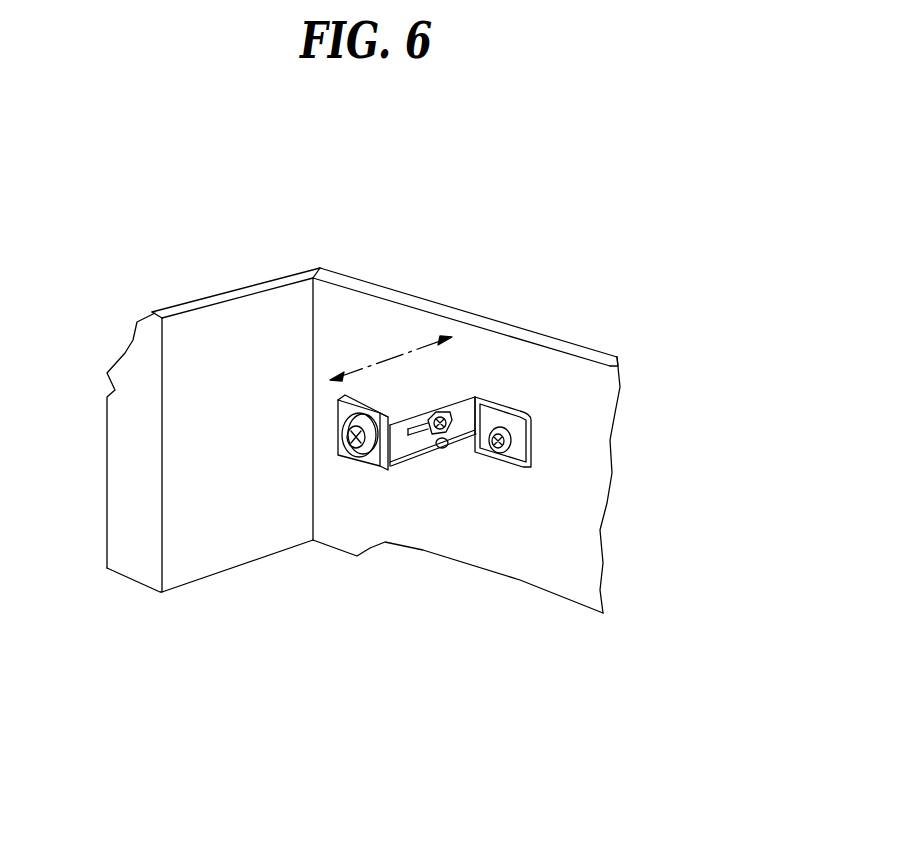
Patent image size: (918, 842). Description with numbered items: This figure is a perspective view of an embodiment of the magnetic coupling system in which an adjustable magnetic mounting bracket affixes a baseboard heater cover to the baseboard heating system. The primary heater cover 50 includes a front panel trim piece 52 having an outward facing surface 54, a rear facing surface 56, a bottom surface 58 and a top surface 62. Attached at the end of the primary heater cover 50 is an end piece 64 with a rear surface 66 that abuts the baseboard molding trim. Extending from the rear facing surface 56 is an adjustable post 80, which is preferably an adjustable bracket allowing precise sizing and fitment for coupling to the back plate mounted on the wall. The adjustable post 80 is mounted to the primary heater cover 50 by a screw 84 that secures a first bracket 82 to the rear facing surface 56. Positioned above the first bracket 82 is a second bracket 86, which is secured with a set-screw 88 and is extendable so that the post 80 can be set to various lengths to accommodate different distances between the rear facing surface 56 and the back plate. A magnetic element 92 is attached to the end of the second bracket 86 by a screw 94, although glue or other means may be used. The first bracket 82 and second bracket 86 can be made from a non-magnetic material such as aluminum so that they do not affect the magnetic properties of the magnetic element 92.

The primary heater cover 50 is at (380, 283).
The front panel trim piece 52 is at (617, 400).
The outward facing surface 54 is at (500, 322).
The rear facing surface 56 is at (570, 570).
The bottom surface 58 is at (138, 580).
The top surface 62 is at (335, 277).
The end piece 64 is at (193, 300).
The rear surface 66 is at (125, 436).
The adjustable post 80 is at (540, 440).
The first bracket 82 is at (495, 400).
The screw 84 is at (530, 467).
The second bracket 86 is at (410, 460).
The set-screw 88 is at (450, 457).
The magnetic element 92 is at (367, 460).
The screw 94 is at (355, 453).